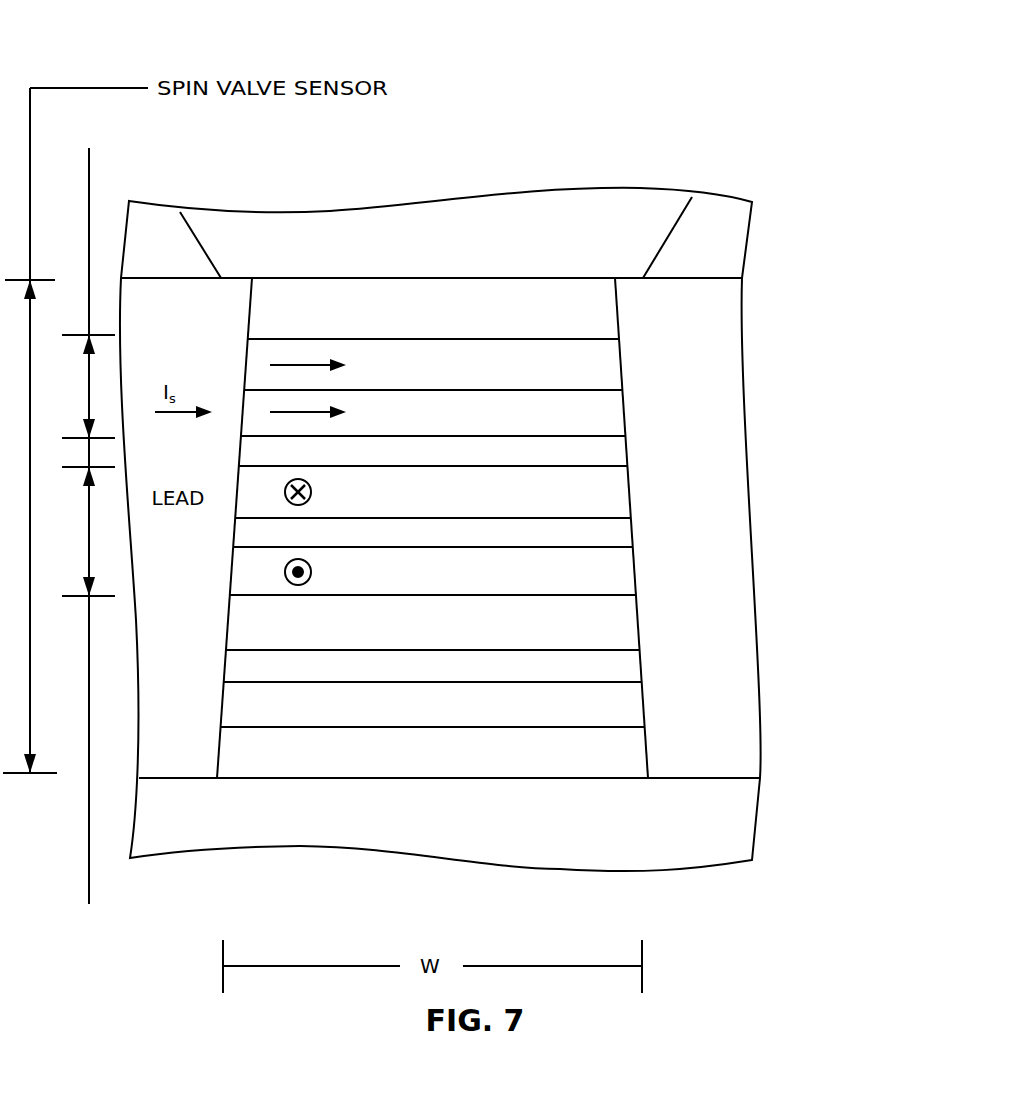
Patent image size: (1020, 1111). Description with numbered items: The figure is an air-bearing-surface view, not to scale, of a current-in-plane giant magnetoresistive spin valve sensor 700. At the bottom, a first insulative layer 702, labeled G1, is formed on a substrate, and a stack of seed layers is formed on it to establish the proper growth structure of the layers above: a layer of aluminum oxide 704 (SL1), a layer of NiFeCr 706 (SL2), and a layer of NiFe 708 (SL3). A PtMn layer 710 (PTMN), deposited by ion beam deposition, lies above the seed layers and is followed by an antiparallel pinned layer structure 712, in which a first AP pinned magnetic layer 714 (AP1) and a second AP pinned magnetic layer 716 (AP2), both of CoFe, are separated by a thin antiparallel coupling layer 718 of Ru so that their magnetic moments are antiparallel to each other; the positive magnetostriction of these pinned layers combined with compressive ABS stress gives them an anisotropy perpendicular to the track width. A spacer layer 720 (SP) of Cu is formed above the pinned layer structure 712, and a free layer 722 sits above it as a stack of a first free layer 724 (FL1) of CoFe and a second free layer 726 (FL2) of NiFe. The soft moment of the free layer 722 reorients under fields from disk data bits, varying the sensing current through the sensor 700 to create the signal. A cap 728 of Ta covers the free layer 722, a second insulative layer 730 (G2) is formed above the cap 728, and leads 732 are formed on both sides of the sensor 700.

The CIP GMR sensor 700 is at (666, 132).
The first insulative layer 702 is at (760, 818).
The Al2O3 seed layer 704 is at (647, 755).
The NiFeCr seed layer 706 is at (643, 710).
The NiFe seed layer 708 is at (641, 670).
The PtMn layer 710 is at (638, 627).
The antiparallel pinned layer structure 712 is at (89, 904).
The first AP pinned magnetic layer 714 is at (636, 570).
The second AP pinned magnetic layer 716 is at (629, 482).
The antiparallel coupling layer 718 is at (633, 537).
The spacer layer 720 is at (626, 453).
The free layer 722 is at (89, 148).
The first free layer 724 is at (623, 410).
The second free layer 726 is at (620, 368).
The cap 728 is at (618, 297).
The second insulative layer 730 is at (640, 189).
The leads 732 is at (748, 505).